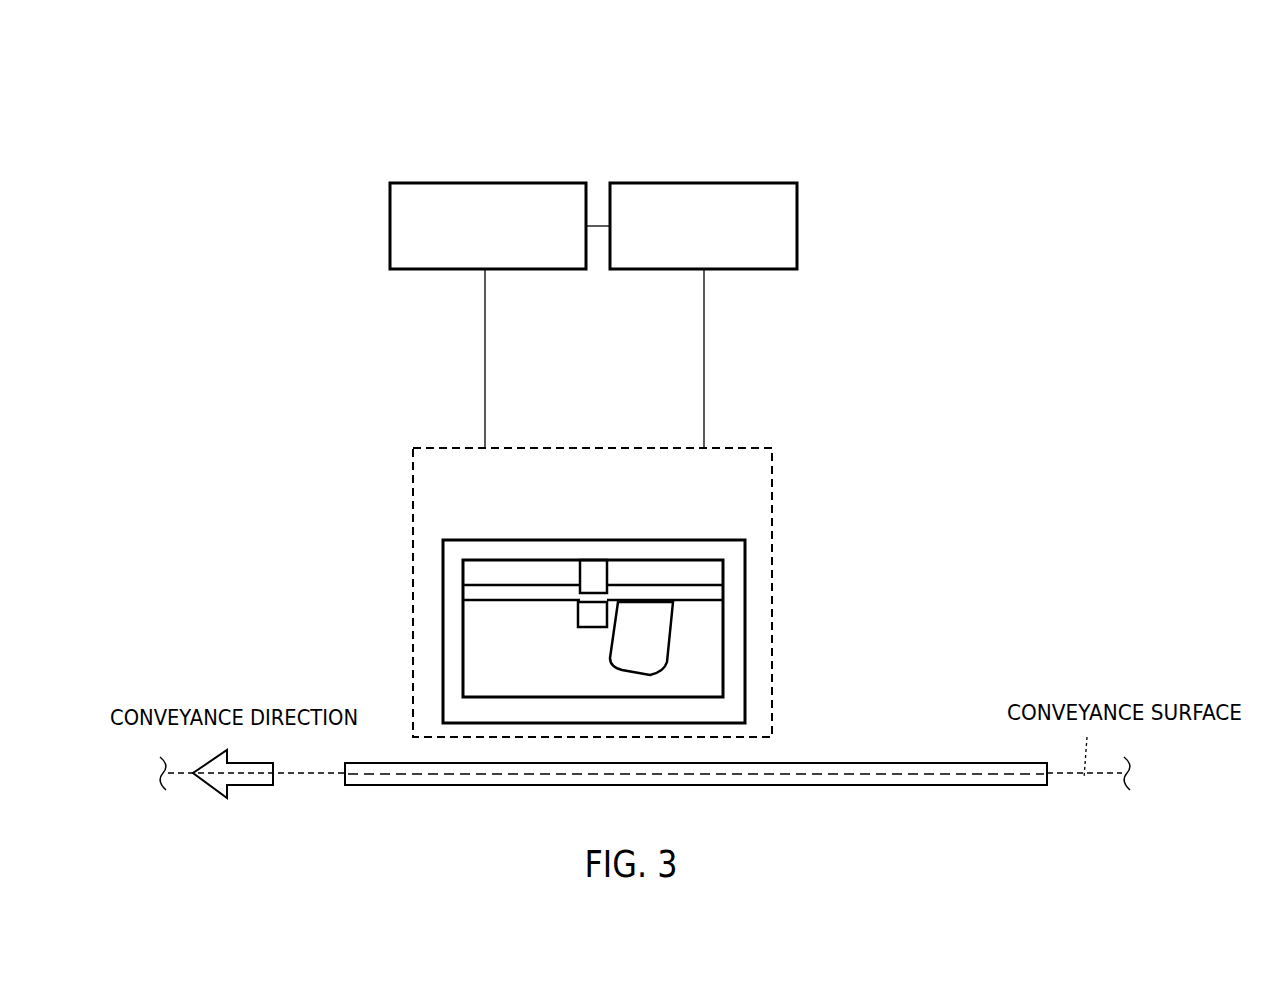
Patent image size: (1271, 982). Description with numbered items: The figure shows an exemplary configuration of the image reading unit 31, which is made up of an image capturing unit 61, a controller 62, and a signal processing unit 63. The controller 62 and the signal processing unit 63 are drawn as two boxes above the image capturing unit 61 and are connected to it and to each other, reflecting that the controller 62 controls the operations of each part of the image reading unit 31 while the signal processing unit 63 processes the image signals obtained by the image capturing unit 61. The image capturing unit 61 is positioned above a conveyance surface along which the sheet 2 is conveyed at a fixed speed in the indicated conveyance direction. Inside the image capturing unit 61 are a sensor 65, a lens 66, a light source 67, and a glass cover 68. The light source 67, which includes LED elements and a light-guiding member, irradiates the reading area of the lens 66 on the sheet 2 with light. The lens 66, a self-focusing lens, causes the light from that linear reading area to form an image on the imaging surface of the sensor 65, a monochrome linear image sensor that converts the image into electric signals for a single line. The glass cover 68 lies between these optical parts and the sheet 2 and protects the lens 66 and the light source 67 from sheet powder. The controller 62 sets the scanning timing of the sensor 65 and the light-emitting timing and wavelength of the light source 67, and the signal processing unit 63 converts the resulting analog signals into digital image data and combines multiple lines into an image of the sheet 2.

The image reading unit 31 is at (792, 110).
The image capturing unit 61 is at (595, 446).
The controller 62 is at (485, 183).
The signal processing unit 63 is at (705, 183).
The sensor 65 is at (597, 580).
The lens 66 is at (586, 630).
The light source 67 is at (657, 630).
The glass cover 68 is at (682, 708).
The sheet 2 is at (948, 762).